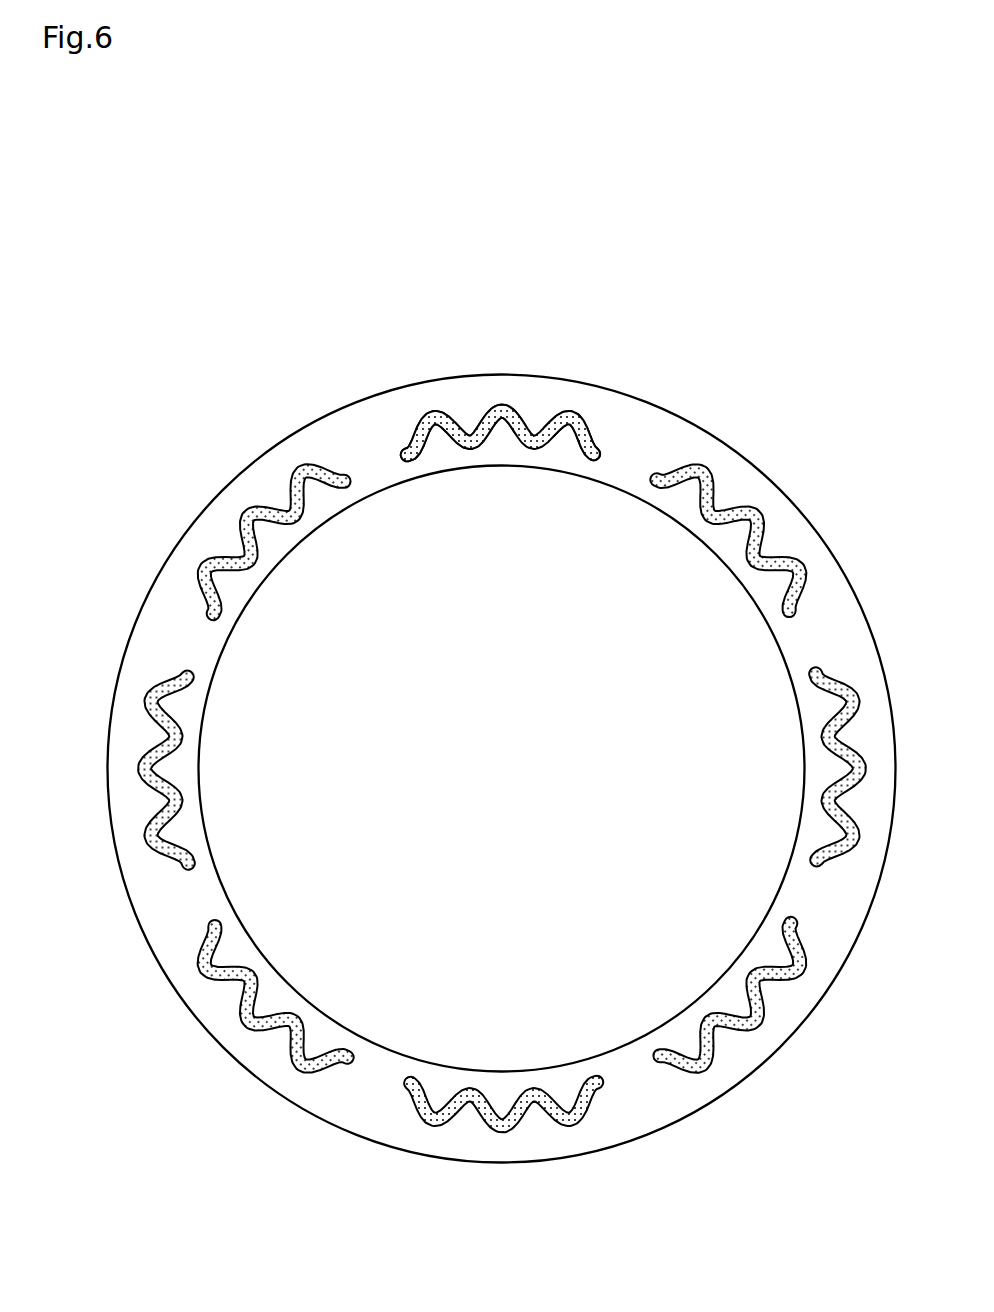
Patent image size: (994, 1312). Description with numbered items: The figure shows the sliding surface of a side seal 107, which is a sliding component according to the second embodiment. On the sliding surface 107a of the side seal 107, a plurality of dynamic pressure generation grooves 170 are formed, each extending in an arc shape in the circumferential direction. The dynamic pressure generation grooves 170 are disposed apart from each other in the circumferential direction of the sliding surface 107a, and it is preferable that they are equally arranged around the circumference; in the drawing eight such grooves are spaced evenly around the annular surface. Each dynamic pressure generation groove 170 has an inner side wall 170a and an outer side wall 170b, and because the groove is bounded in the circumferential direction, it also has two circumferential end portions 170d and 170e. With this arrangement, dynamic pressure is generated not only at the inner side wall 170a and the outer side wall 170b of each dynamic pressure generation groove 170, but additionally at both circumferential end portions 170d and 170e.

The side seal 107 is at (725, 392).
The sliding surface 107a is at (615, 473).
The dynamic pressure generation groove 170 is at (466, 398).
The inner side wall 170a is at (470, 436).
The outer side wall 170b is at (517, 412).
The circumferential end portion 170d is at (410, 427).
The circumferential end portion 170e is at (596, 427).